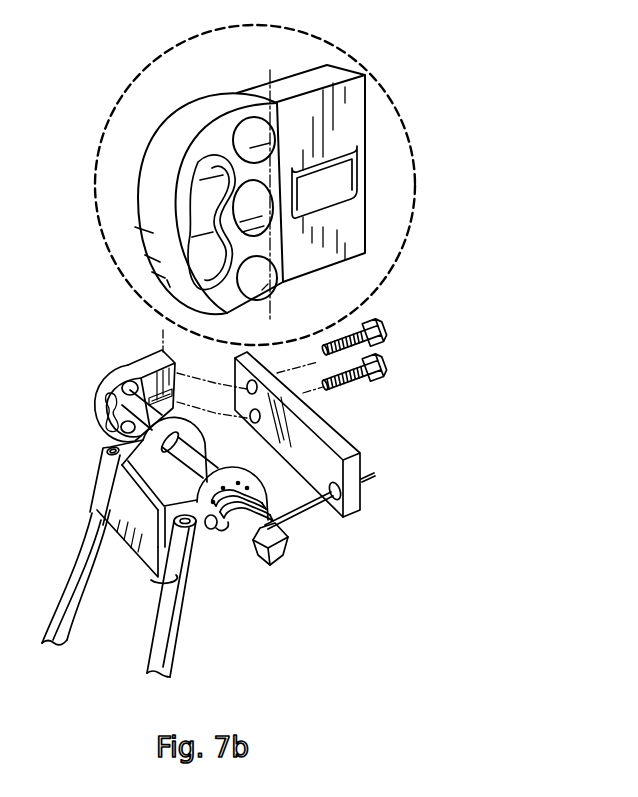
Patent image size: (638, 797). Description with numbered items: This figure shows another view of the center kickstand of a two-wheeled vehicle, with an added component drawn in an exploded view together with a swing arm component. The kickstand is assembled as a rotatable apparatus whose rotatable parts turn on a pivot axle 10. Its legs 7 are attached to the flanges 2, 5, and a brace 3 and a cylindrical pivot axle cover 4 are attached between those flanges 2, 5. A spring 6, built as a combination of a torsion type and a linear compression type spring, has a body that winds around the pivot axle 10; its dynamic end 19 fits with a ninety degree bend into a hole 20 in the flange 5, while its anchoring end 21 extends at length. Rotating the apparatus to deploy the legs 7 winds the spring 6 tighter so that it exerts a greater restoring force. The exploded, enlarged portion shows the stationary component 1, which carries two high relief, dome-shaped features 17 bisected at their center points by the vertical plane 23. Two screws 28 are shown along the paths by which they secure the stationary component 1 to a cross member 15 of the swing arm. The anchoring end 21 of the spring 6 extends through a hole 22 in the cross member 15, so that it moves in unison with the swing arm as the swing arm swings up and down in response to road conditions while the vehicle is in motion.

The stationary component 1 is at (97, 407).
The flange 2 is at (100, 494).
The brace 3 is at (130, 547).
The pivot axle cover 4 is at (190, 460).
The flange 5 is at (225, 463).
The spring 6 is at (233, 533).
The legs 7 is at (73, 613).
The pivot axle 10 is at (282, 553).
The cross member 15 is at (323, 430).
The dome-shaped features 17 is at (257, 138).
The dynamic end 19 is at (207, 528).
The hole 20 is at (213, 532).
The anchoring end 21 is at (375, 474).
The hole 22 is at (337, 502).
The vertical plane 23 is at (271, 193).
The screws 28 is at (390, 334).